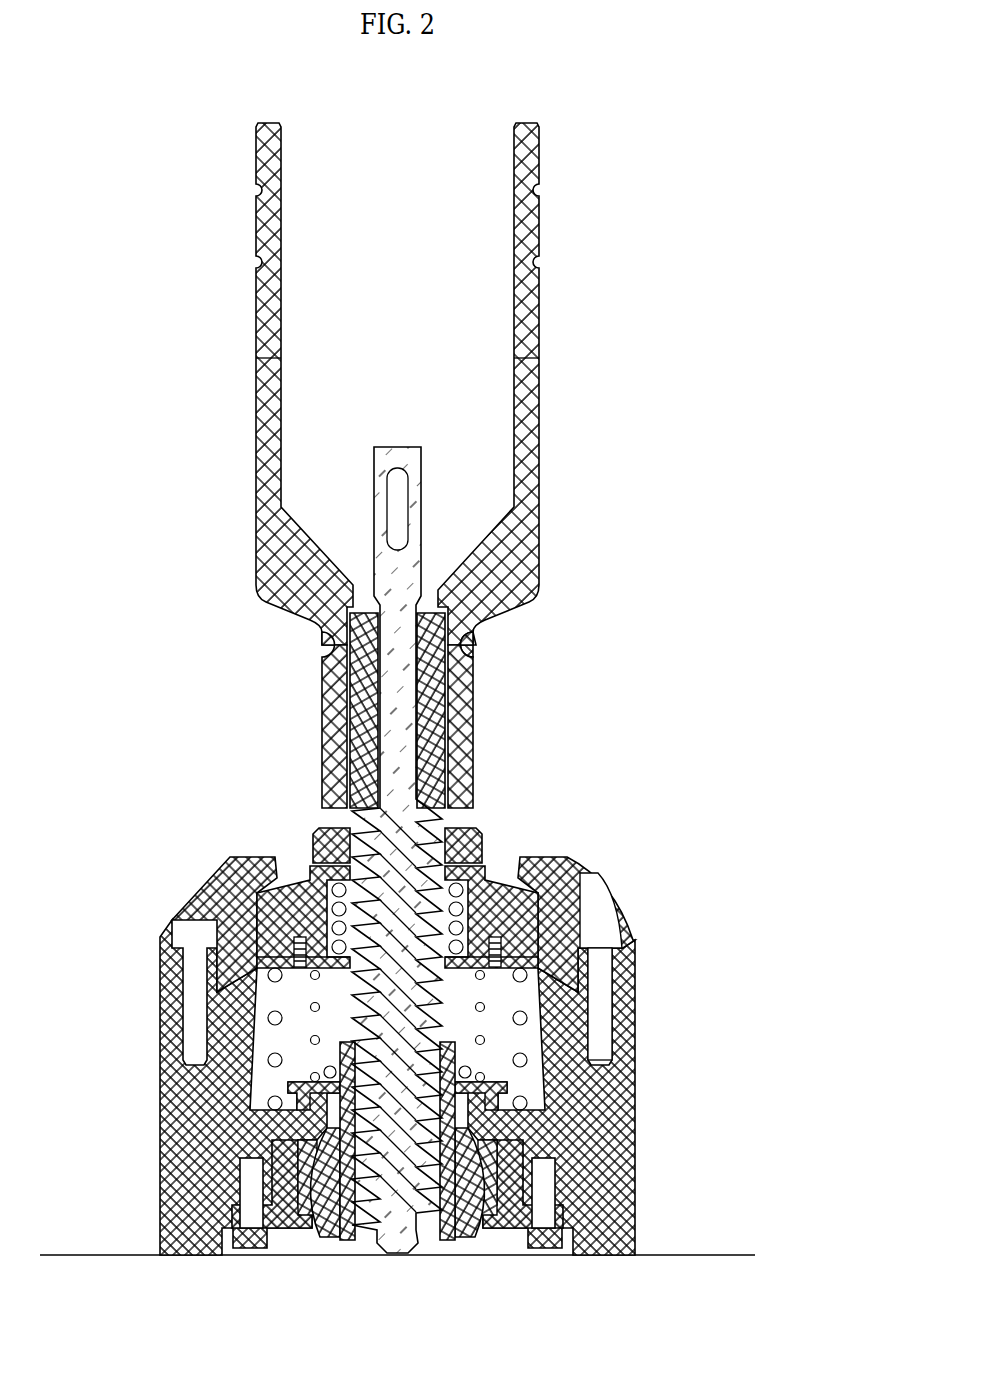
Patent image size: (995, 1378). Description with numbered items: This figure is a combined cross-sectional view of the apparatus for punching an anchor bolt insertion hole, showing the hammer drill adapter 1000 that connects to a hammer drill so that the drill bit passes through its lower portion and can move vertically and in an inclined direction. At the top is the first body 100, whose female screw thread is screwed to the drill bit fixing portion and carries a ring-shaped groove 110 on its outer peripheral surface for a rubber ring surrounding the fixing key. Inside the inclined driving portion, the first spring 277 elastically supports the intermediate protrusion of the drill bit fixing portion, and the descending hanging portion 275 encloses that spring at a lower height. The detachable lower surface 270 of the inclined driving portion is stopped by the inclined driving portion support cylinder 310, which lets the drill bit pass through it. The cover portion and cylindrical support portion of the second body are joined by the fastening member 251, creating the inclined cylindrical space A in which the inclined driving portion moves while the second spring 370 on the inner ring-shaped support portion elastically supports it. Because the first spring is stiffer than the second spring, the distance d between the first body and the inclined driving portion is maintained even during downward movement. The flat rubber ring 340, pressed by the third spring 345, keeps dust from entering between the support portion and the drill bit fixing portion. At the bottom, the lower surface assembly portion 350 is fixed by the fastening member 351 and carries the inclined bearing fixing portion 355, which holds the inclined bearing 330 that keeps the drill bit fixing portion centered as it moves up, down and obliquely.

The hammer drill adapter 1000 is at (597, 122).
The first body 100 is at (528, 560).
The ring-shaped groove 110 is at (470, 640).
The first spring 277 is at (473, 876).
The descending hanging portion 275 is at (520, 897).
The fastening member 251 is at (197, 920).
The distance between the first body and the inclined driving portion d is at (325, 818).
The lower surface of the inclined driving portion 270 is at (512, 963).
The inclined cylindrical space A is at (250, 1010).
The third spring 345 is at (587, 1023).
The second spring 370 is at (270, 1060).
The inclined driving portion support cylinder 310 is at (315, 1067).
The flat rubber ring 340 is at (480, 1090).
The inclined bearing fixing portion 355 is at (520, 1142).
The fastening member 351 is at (547, 1182).
The inclined bearing 330 is at (310, 1217).
The lower surface assembly portion 350 is at (515, 1225).